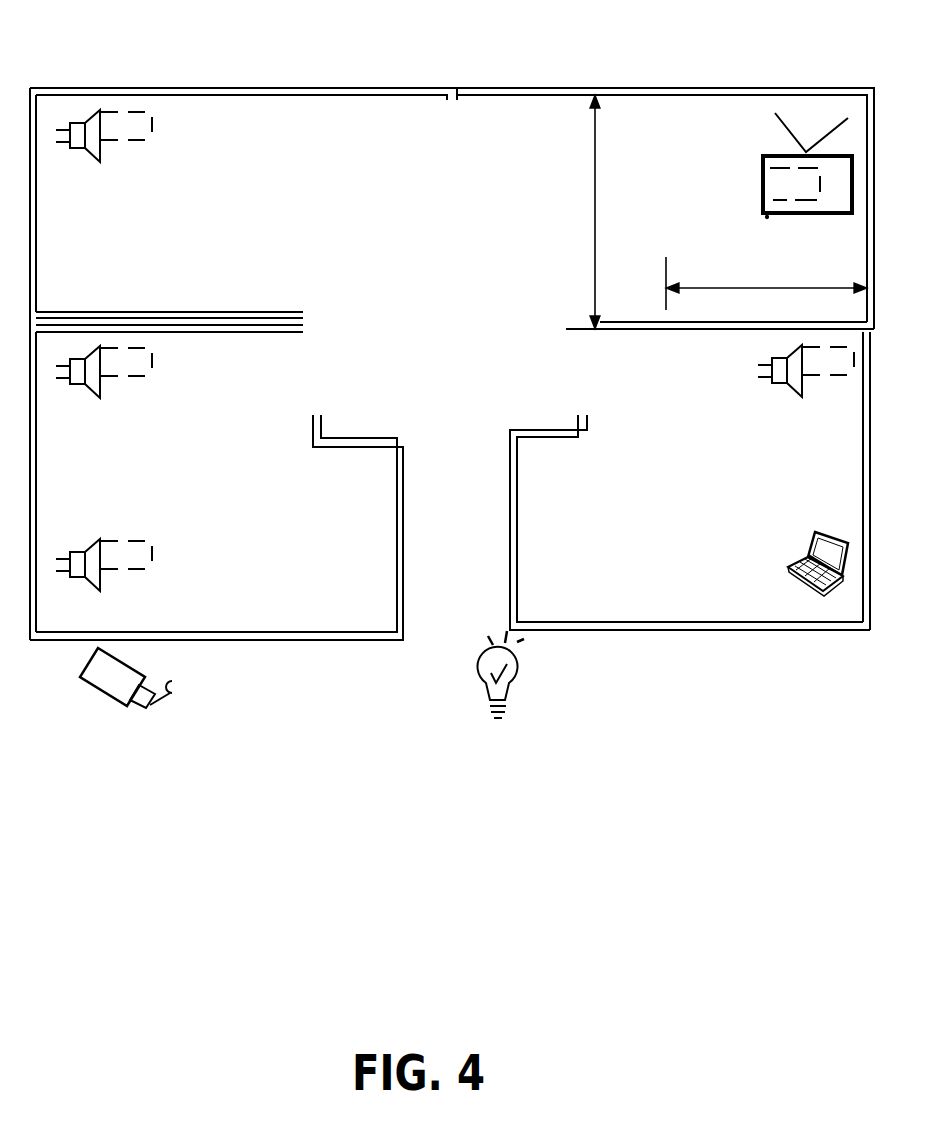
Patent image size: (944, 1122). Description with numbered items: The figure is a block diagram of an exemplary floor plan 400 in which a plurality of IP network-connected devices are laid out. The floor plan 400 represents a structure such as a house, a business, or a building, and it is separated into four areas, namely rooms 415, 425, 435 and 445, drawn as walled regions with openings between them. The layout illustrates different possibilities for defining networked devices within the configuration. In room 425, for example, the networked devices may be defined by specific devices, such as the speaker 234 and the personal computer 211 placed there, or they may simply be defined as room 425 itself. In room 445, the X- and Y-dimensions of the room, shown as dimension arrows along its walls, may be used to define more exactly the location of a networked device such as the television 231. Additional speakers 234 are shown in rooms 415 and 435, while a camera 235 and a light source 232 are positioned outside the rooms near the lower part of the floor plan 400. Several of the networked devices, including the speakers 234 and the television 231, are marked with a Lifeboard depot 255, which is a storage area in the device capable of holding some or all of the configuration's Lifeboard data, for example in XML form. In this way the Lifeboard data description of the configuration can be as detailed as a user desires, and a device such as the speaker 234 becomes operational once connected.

The floor plan 400 is at (446, 34).
The room 435 is at (208, 205).
The room 445 is at (695, 200).
The room 415 is at (215, 497).
The room 425 is at (708, 498).
The speaker 234 is at (800, 427).
The Lifeboard depot 255 is at (810, 193).
The television 231 is at (827, 269).
The personal computer 211 is at (840, 616).
The light source 232 is at (520, 756).
The camera 235 is at (122, 740).